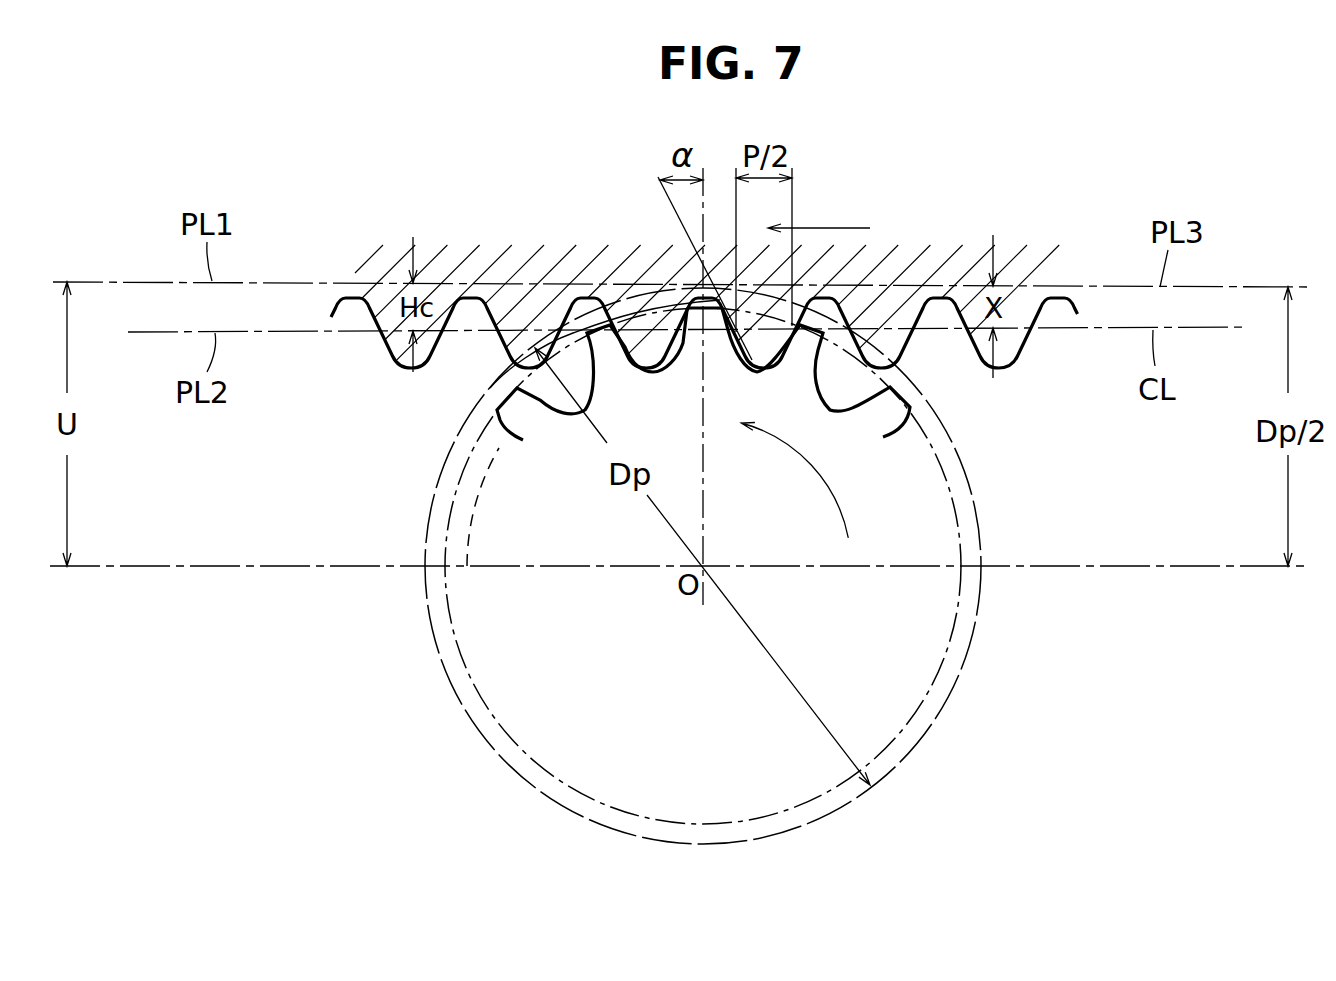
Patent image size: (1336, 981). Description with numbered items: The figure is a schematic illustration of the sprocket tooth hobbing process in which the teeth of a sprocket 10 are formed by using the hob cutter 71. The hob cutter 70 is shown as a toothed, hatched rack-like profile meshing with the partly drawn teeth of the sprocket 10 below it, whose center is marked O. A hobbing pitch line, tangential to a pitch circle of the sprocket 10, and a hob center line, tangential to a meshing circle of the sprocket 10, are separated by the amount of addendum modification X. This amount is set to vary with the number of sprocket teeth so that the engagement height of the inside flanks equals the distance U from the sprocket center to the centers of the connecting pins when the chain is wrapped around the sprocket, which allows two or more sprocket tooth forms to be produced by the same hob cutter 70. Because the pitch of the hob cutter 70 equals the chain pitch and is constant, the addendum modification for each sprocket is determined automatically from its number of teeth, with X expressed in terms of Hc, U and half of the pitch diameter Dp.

The hob cutter 70 is at (870, 298).
The hob cutter 71 is at (406, 352).
The sprocket 10 is at (882, 419).